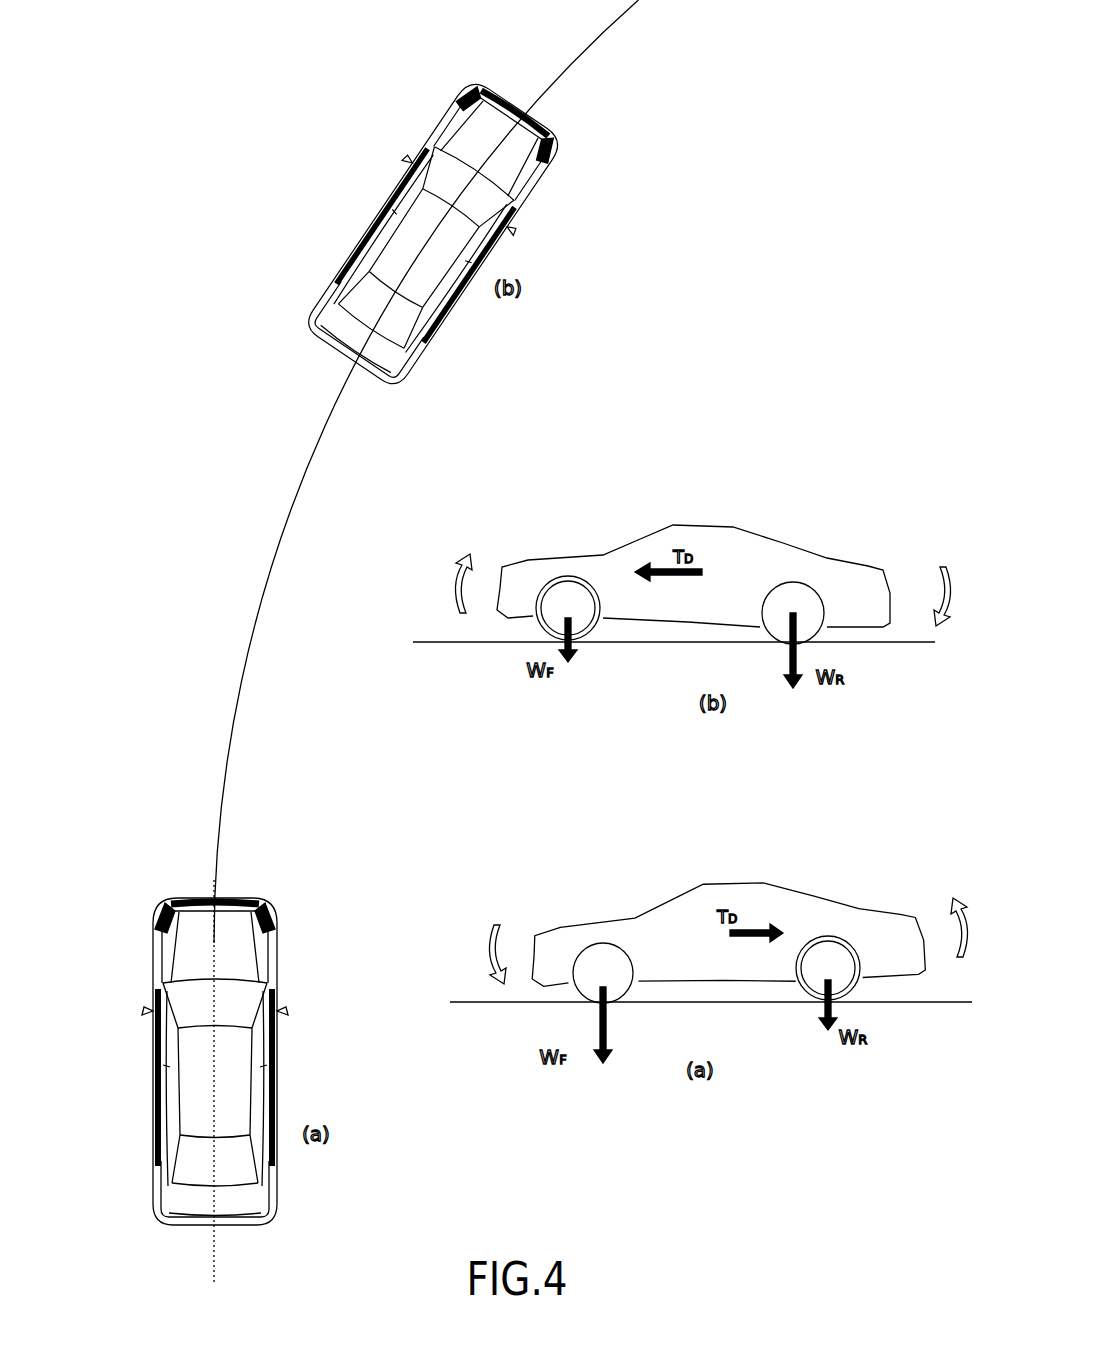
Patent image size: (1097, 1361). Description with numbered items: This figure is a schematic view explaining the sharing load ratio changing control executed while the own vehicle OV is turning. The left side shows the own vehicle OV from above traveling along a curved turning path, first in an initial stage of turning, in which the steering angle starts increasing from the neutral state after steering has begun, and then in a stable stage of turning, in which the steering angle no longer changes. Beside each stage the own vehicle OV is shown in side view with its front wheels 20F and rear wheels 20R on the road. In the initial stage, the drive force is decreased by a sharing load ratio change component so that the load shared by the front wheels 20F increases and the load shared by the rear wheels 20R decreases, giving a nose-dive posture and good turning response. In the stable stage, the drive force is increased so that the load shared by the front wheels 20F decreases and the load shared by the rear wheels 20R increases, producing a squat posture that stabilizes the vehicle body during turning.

The own vehicle OV is at (437, 141).
The front wheels 20F is at (569, 596).
The rear wheels 20R is at (806, 598).